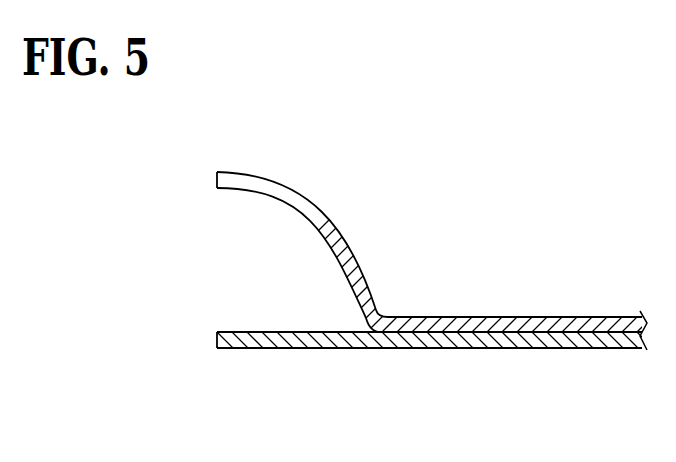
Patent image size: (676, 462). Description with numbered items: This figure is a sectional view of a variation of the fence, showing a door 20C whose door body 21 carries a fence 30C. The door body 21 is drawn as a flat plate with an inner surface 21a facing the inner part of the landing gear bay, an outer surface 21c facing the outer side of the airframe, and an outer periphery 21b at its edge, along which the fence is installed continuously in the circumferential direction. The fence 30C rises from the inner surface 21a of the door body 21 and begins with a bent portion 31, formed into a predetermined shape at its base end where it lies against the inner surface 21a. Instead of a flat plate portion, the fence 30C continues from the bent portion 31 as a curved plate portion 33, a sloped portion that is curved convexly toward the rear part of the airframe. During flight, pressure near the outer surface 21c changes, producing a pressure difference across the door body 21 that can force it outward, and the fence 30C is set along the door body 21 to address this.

The door 20C is at (362, 362).
The door body 21 is at (493, 349).
The inner surface 21a is at (597, 316).
The outer periphery 21b is at (216, 345).
The outer surface 21c is at (596, 349).
The fence 30C is at (250, 172).
The bent portion 31 is at (379, 306).
The curved plate portion 33 is at (307, 221).